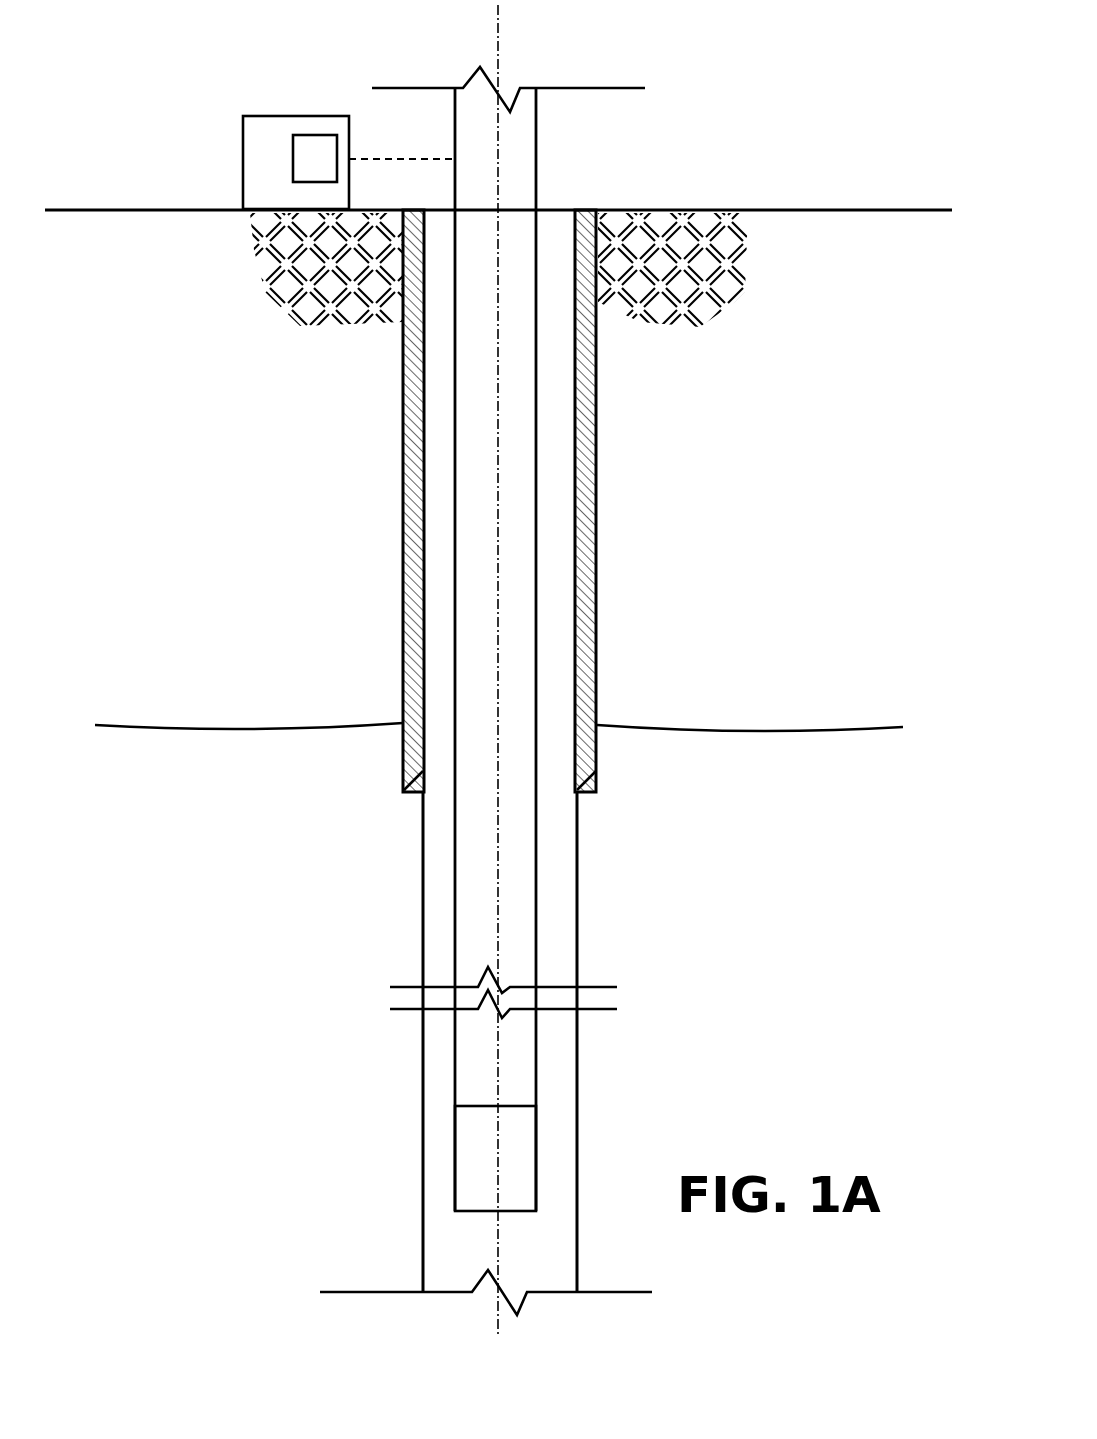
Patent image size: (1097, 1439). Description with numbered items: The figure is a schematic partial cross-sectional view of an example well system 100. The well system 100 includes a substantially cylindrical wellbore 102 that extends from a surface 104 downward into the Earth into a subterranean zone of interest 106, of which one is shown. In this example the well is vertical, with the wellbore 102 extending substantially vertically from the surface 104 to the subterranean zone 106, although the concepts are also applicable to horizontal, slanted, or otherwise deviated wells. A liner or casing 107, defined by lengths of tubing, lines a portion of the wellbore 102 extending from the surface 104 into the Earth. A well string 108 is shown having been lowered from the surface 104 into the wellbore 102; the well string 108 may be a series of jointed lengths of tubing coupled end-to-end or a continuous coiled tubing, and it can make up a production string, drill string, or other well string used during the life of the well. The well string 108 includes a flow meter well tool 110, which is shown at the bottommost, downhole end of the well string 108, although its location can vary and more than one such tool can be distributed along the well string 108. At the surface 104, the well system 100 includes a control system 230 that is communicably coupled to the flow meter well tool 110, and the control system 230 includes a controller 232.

The well system 100 is at (735, 106).
The wellbore 102 is at (585, 914).
The surface 104 is at (817, 209).
The subterranean zone of interest 106 is at (858, 845).
The casing 107 is at (568, 388).
The well string 108 is at (536, 568).
The flow meter well tool 110 is at (495, 1158).
The control system 230 is at (267, 115).
The controller 232 is at (323, 134).